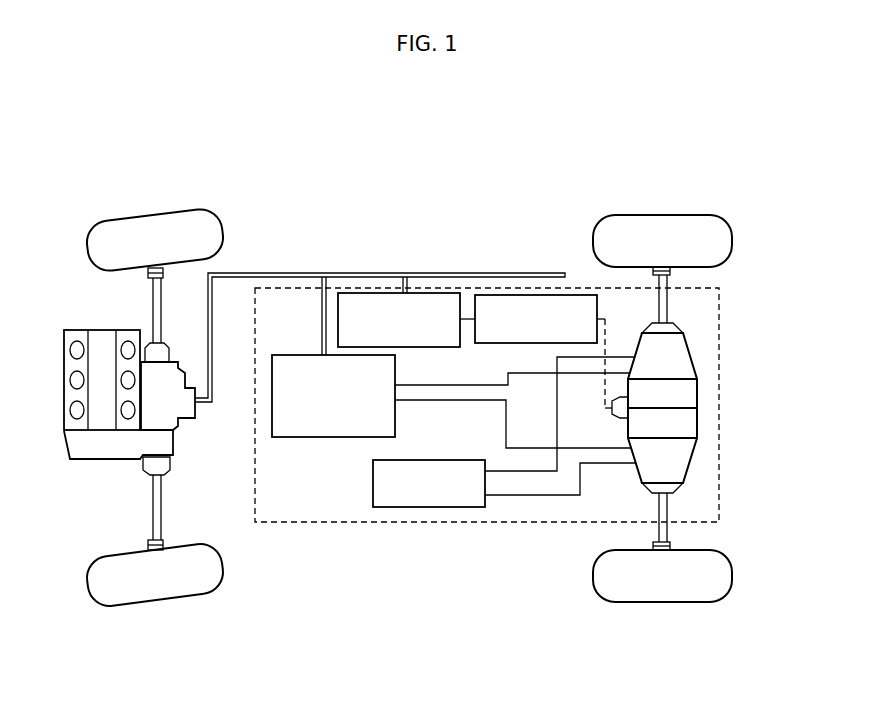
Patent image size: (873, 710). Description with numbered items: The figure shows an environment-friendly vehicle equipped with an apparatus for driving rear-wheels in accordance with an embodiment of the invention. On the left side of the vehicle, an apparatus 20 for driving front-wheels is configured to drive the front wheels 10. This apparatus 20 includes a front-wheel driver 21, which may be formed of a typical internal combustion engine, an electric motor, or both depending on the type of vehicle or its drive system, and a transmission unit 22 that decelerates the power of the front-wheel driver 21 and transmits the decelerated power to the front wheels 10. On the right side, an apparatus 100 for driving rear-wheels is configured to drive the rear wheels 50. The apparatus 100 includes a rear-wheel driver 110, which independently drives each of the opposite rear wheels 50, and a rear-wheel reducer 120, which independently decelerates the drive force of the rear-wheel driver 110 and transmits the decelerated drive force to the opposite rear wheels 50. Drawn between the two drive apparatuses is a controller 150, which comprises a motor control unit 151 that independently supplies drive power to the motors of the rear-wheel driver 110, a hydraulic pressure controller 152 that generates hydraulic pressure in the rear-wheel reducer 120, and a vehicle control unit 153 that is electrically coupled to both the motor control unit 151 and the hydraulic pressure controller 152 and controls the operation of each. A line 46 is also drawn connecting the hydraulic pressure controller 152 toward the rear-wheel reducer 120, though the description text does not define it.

The front wheels 10 is at (148, 212).
The apparatus for driving front-wheels 20 is at (105, 405).
The front-wheel driver 21 is at (68, 362).
The transmission unit 22 is at (110, 445).
The hydraulic line 46 is at (608, 350).
The rear wheels 50 is at (683, 240).
The apparatus for driving rear-wheels 100 is at (532, 320).
The rear-wheel driver 110 is at (701, 415).
The rear-wheel reducer 120 is at (692, 391).
The controller 150 is at (487, 320).
The motor control unit 151 is at (285, 360).
The hydraulic pressure controller 152 is at (498, 295).
The vehicle control unit 153 is at (367, 302).